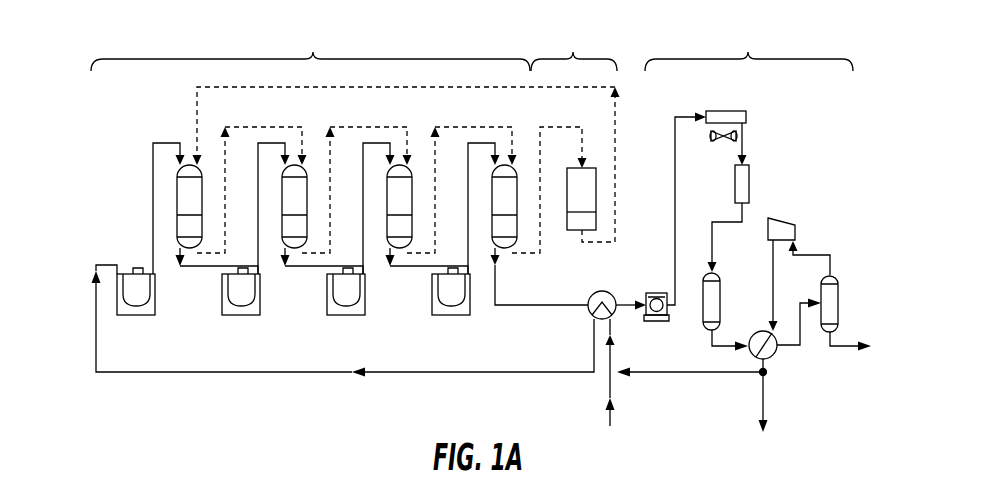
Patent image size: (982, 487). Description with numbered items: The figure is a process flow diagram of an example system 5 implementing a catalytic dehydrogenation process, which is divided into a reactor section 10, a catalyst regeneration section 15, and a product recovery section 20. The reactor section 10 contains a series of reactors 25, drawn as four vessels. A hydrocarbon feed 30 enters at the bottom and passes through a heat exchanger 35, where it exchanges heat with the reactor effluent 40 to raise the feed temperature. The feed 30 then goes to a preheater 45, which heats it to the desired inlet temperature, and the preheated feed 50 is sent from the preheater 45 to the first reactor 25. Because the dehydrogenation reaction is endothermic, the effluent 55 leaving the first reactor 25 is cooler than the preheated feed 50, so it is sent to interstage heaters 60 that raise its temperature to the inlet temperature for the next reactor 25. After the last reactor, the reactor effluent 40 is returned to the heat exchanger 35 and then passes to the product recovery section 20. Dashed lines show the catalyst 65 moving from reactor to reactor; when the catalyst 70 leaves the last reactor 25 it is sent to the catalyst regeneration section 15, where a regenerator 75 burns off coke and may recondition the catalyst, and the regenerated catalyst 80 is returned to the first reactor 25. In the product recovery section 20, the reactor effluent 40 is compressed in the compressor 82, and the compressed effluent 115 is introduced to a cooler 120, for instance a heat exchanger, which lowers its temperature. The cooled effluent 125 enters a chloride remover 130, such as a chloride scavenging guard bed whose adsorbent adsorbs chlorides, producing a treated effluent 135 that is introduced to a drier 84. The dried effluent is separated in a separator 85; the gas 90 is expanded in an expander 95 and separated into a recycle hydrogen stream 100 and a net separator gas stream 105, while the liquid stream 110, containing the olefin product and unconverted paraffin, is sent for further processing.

The system 5 is at (86, 32).
The reactor section 10 is at (310, 48).
The catalyst regeneration section 15 is at (574, 47).
The product recovery section 20 is at (749, 47).
The reactor 25 is at (347, 206).
The hydrocarbon feed 30 is at (610, 392).
The heat exchanger 35 is at (600, 285).
The reactor effluent 40 is at (541, 306).
The preheater 45 is at (135, 315).
The preheated feed 50 is at (153, 228).
The effluent 55 is at (199, 268).
The interstage heater 60 is at (240, 315).
The catalyst 65 is at (285, 127).
The catalyst 70 is at (562, 127).
The regenerator 75 is at (581, 199).
The regenerated catalyst 80 is at (617, 170).
The compressor 82 is at (655, 293).
The drier 84 is at (721, 301).
The separator 85 is at (840, 301).
The gas 90 is at (828, 255).
The expander 95 is at (790, 218).
The recycle hydrogen stream 100 is at (700, 373).
The net separator gas stream 105 is at (770, 392).
The liquid stream 110 is at (843, 350).
The compressed effluent 115 is at (673, 223).
The cooler 120 is at (737, 111).
The cooled effluent 125 is at (742, 140).
The chloride remover 130 is at (733, 181).
The treated effluent 135 is at (726, 222).